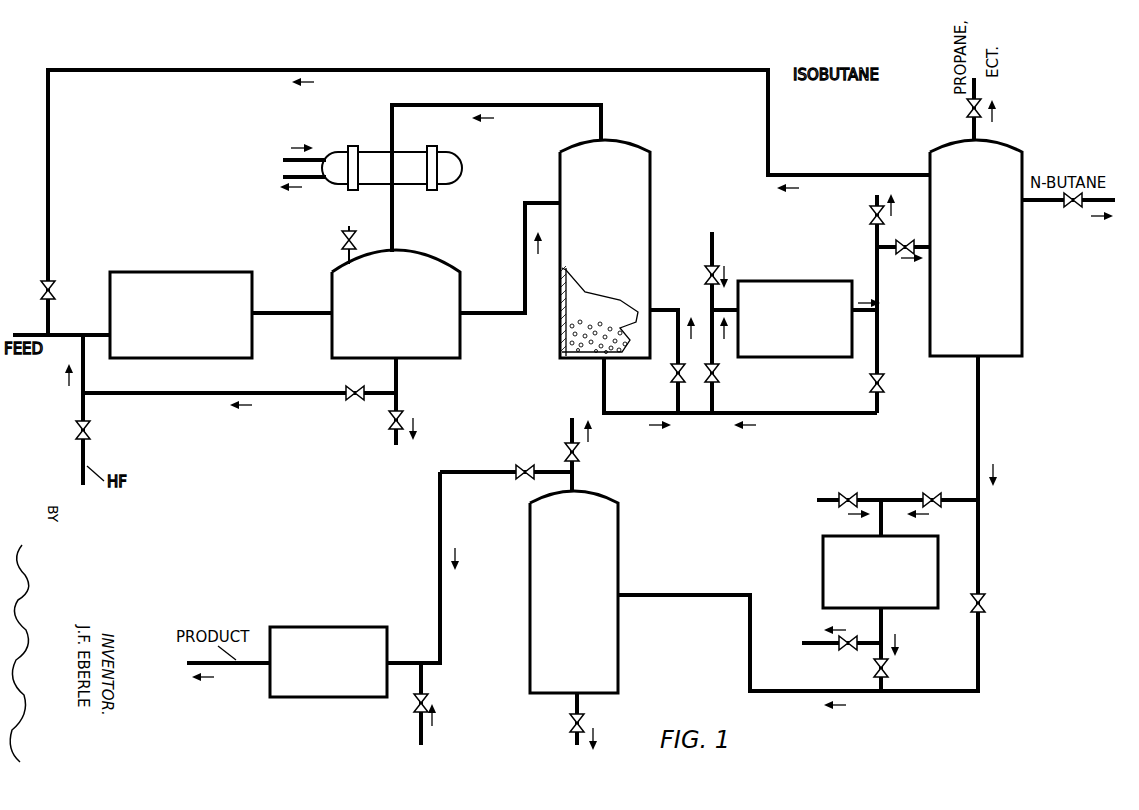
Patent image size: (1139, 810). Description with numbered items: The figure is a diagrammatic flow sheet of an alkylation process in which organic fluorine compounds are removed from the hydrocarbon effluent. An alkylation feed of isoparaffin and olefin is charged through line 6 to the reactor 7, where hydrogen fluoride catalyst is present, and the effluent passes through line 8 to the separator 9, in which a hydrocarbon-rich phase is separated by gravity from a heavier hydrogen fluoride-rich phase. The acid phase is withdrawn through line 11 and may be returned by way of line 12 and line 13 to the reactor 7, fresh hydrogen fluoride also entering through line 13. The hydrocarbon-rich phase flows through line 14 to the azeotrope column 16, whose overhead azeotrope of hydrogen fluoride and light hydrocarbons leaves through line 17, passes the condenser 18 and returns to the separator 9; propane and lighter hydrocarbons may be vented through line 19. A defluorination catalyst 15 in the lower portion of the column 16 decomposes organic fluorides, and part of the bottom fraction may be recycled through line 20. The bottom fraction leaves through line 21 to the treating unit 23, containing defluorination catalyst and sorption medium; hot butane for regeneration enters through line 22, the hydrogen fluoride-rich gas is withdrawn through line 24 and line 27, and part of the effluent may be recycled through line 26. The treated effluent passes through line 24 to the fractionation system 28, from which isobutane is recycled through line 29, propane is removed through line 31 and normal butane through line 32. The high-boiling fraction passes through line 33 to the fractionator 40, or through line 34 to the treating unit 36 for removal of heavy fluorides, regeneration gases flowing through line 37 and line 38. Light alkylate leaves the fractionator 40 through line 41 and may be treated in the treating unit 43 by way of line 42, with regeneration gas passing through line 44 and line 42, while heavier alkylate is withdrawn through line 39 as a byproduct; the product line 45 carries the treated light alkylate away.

The line 6 is at (30, 333).
The reactor 7 is at (162, 280).
The line 8 is at (277, 318).
The separator 9 is at (454, 328).
The line 11 is at (398, 378).
The line 12 is at (212, 393).
The line 13 is at (87, 389).
The line 14 is at (474, 314).
The defluorination catalyst 15 is at (561, 354).
The azeotrope column 16 is at (640, 216).
The line 17 is at (604, 121).
The condenser 18 is at (453, 170).
The line 19 is at (346, 222).
The line 20 is at (665, 311).
The line 21 is at (646, 410).
The line 22 is at (715, 250).
The treating unit 23 is at (790, 290).
The line 24 is at (880, 280).
The line 26 is at (882, 404).
The line 27 is at (872, 209).
The fractionation system 28 is at (1013, 272).
The line 29 is at (812, 175).
The line 31 is at (977, 85).
The line 32 is at (1043, 204).
The line 33 is at (982, 392).
The line 34 is at (893, 497).
The treating unit 36 is at (835, 590).
The line 37 is at (830, 497).
The line 38 is at (836, 648).
The line 39 is at (570, 713).
The fractionator 40 is at (542, 590).
The line 41 is at (578, 486).
The line 42 is at (438, 550).
The treating unit 43 is at (306, 636).
The line 44 is at (416, 719).
The product line 45 is at (251, 668).